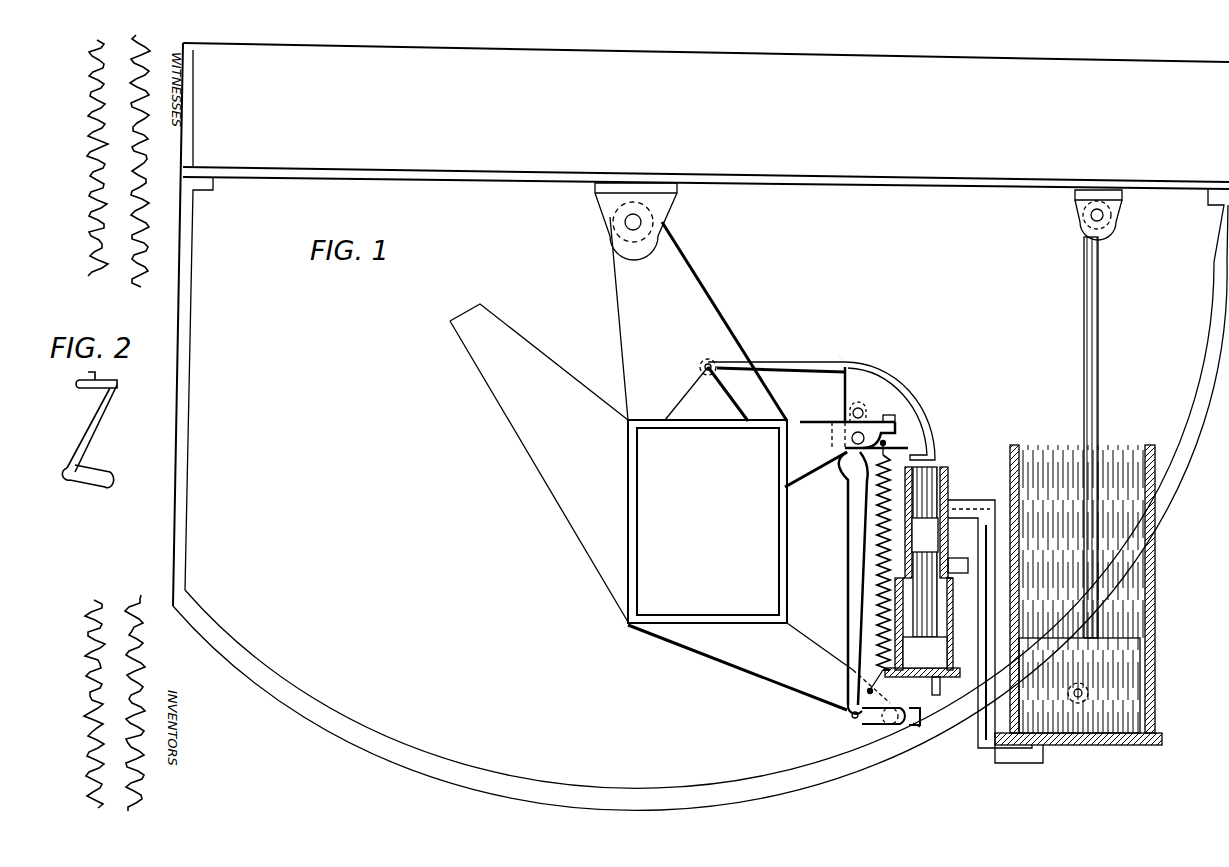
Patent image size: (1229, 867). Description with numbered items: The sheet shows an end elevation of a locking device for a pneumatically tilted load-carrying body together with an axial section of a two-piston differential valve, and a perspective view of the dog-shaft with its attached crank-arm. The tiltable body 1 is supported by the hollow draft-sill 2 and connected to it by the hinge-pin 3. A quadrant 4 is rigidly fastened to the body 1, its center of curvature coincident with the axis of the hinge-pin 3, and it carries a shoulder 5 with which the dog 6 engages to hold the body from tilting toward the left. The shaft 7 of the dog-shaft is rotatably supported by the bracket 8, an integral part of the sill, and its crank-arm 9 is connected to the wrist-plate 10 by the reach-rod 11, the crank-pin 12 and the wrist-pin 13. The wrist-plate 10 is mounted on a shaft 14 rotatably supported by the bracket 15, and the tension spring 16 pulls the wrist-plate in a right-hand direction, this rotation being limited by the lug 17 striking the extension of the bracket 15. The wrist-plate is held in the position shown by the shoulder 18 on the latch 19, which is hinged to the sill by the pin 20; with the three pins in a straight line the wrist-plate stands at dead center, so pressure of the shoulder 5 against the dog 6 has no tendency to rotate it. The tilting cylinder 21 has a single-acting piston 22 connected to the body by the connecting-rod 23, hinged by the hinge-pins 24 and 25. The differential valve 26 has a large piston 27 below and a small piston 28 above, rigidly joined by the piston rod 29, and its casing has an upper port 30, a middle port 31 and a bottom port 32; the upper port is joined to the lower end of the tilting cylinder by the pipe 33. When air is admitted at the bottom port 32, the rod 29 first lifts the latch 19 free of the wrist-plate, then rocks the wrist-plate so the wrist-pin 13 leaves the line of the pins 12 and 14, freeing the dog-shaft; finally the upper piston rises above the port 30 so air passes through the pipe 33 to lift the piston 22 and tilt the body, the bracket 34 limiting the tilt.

In FIG. 1, the tiltable body 1 is at (701, 324).
In FIG. 1, the hollow draft-sill 2 is at (642, 425).
In FIG. 1, the hinge-pin 3 is at (642, 222).
In FIG. 1, the quadrant 4 is at (628, 805).
In FIG. 1, the shoulder 5 is at (918, 724).
In FIG. 1, the dog 6 is at (913, 727).
In FIG. 2, the dog 6 is at (96, 481).
In FIG. 1, the shaft 7 is at (890, 725).
In FIG. 2, the shaft 7 is at (100, 430).
In FIG. 1, the bracket 8 is at (759, 581).
In FIG. 1, the crank-arm 9 is at (870, 722).
In FIG. 2, the crank-arm 9 is at (86, 384).
In FIG. 1, the wrist-plate 10 is at (862, 383).
In FIG. 1, the reach-rod 11 is at (856, 560).
In FIG. 1, the crank-pin 12 is at (850, 716).
In FIG. 1, the wrist-pin 13 is at (862, 409).
In FIG. 1, the shaft 14 is at (863, 436).
In FIG. 1, the bracket 15 is at (852, 439).
In FIG. 1, the tension spring 16 is at (877, 508).
In FIG. 1, the lug 17 is at (893, 416).
In FIG. 1, the shoulder 18 is at (842, 370).
In FIG. 1, the latch 19 is at (785, 361).
In FIG. 1, the pin 20 is at (708, 367).
In FIG. 1, the tilting cylinder 21 is at (1112, 450).
In FIG. 1, the single-acting piston 22 is at (1057, 712).
In FIG. 1, the connecting-rod 23 is at (1100, 330).
In FIG. 1, the hinge-pin 24 is at (1082, 697).
In FIG. 1, the hinge-pin 25 is at (1104, 218).
In FIG. 1, the differential valve 26 is at (946, 472).
In FIG. 1, the large piston 27 is at (922, 627).
In FIG. 1, the small piston 28 is at (925, 535).
In FIG. 1, the piston rod 29 is at (924, 476).
In FIG. 1, the upper port 30 is at (952, 511).
In FIG. 1, the middle port 31 is at (958, 570).
In FIG. 1, the bottom port 32 is at (931, 690).
In FIG. 1, the pipe 33 is at (965, 502).
In FIG. 1, the bracket 34 is at (539, 463).